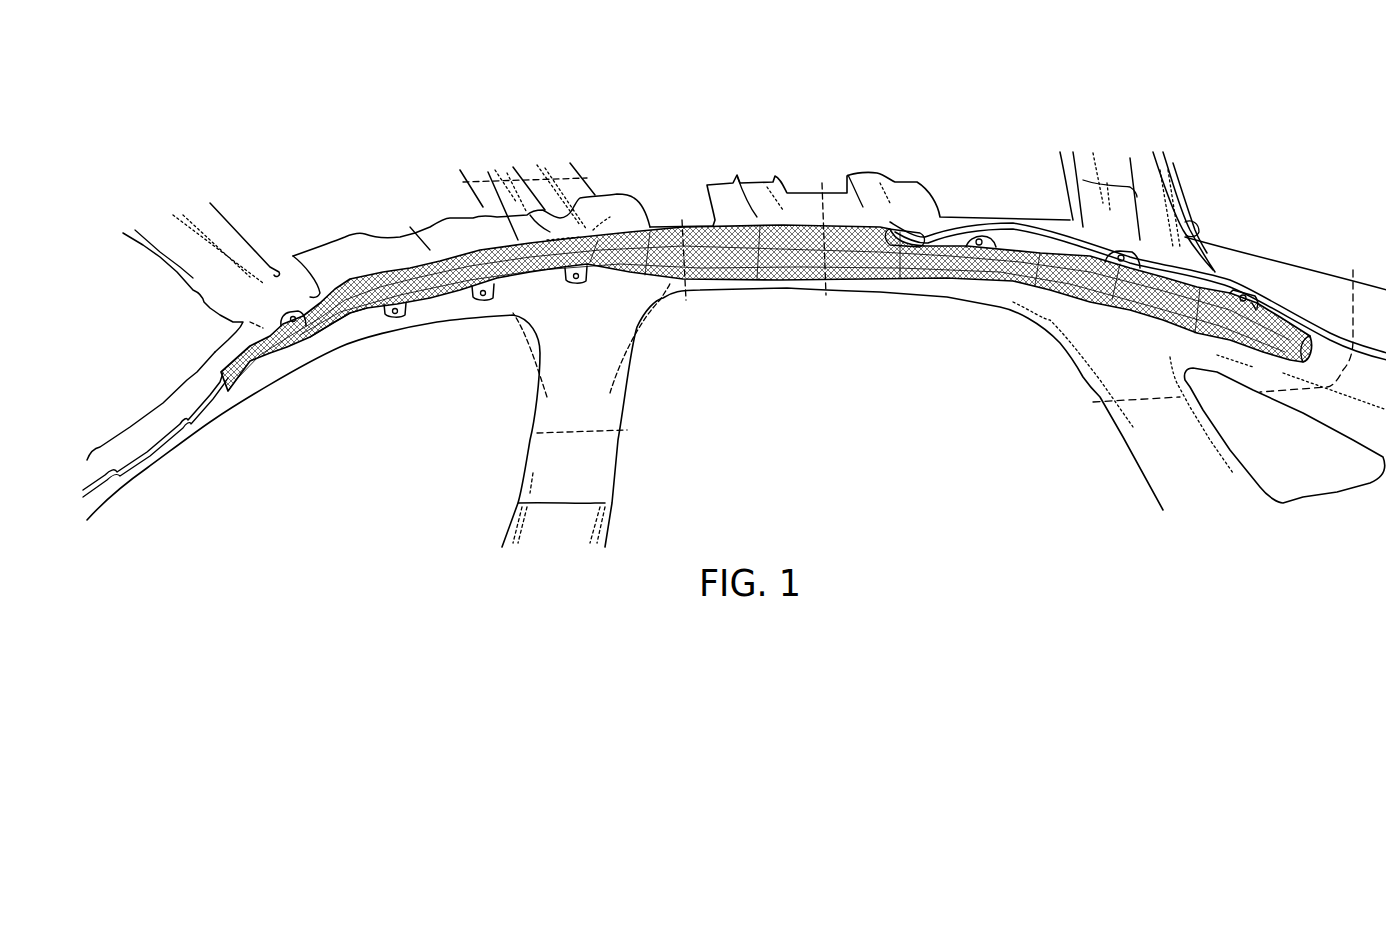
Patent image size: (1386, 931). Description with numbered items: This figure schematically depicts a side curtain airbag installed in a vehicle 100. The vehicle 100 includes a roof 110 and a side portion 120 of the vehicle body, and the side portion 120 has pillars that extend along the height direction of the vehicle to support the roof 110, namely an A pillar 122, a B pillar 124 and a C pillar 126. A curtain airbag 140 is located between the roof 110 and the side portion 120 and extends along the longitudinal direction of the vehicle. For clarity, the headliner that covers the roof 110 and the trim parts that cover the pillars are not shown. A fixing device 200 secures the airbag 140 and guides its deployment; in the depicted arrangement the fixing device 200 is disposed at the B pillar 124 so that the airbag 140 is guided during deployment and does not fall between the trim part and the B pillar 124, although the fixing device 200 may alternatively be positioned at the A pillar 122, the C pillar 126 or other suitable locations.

The vehicle 100 is at (1254, 57).
The roof 110 is at (623, 200).
The side portion 120 is at (870, 288).
The A pillar 122 is at (223, 400).
The B pillar 124 is at (623, 383).
The C pillar 126 is at (1103, 363).
The curtain airbag 140 is at (343, 320).
The fixing device 200 is at (560, 257).